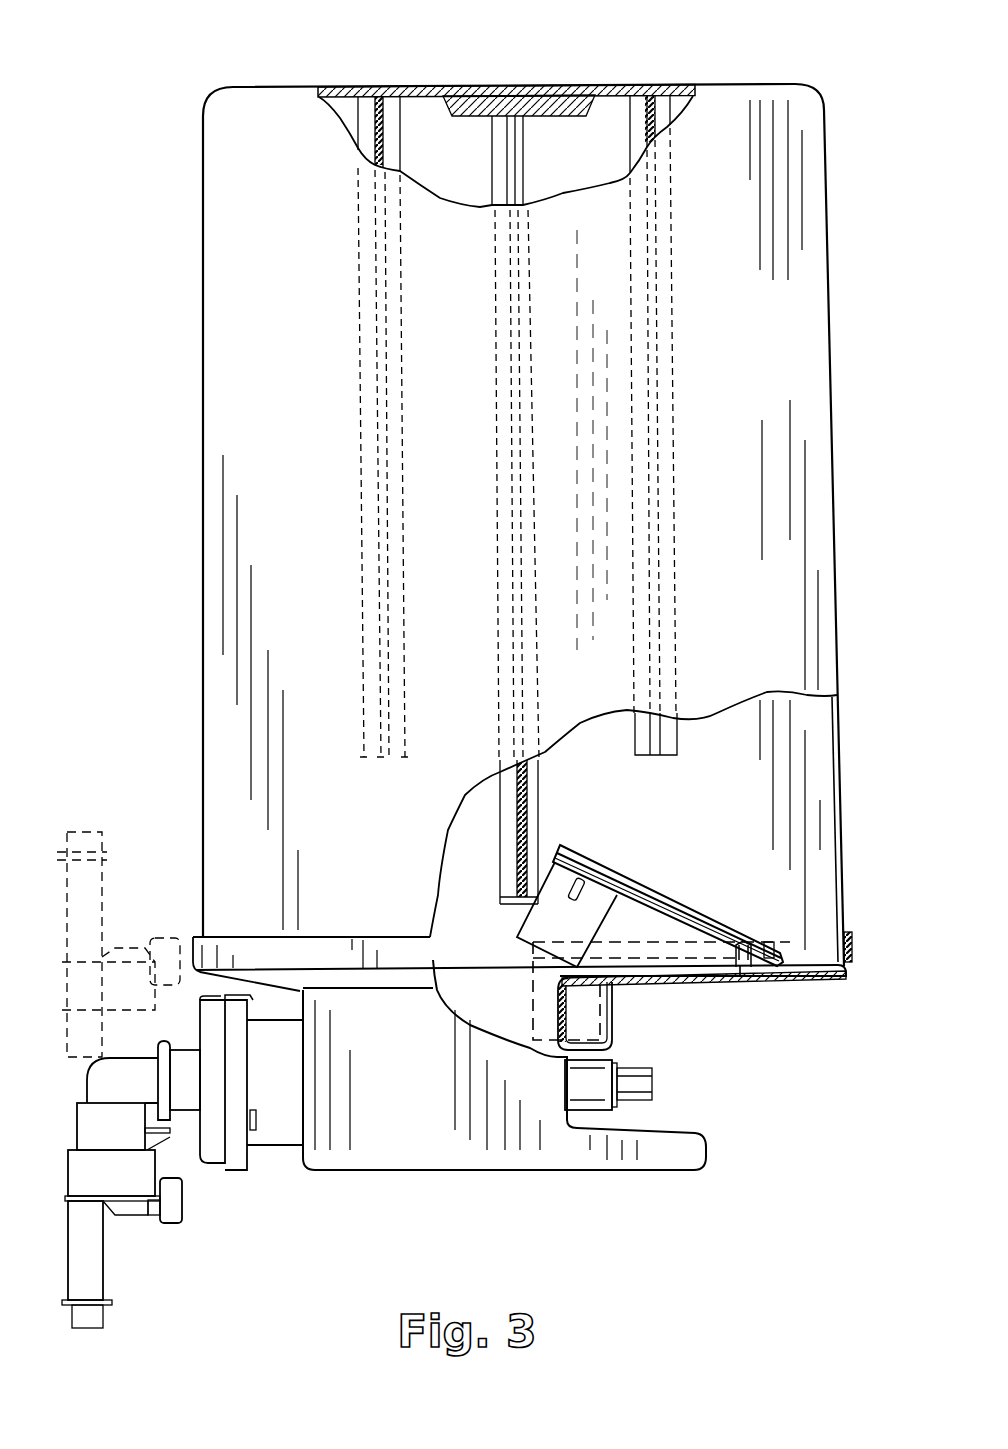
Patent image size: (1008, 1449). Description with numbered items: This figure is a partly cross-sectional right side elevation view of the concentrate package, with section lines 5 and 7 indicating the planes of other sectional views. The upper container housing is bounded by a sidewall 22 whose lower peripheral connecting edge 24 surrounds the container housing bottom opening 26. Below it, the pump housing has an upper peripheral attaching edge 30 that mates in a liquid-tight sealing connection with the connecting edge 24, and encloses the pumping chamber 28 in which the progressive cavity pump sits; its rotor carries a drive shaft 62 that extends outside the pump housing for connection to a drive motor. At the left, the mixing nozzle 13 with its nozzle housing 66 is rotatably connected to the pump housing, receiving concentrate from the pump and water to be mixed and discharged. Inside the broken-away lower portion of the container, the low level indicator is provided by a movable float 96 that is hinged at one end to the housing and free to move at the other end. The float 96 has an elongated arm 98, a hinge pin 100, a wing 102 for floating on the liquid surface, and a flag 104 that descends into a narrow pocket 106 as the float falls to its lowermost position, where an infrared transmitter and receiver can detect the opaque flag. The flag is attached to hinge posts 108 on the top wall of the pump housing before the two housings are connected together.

The section line 5- 5 is at (470, 808).
The section line 7- 7 is at (506, 22).
The mixing nozzle 13 is at (96, 1189).
The sidewall 22 is at (836, 757).
The lower peripheral connecting edge 24 is at (852, 969).
The container housing bottom opening 26 is at (795, 975).
The pumping chamber 28 is at (507, 1007).
The upper peripheral attaching edge 30 is at (853, 947).
The drive shaft 62 is at (650, 1087).
The nozzle housing 66 is at (98, 1141).
The float 96 is at (686, 808).
The elongated arm 98 is at (678, 912).
The hinge pin 100 is at (748, 943).
The wing 102 is at (607, 876).
The flag 104 is at (520, 935).
The narrow pocket 106 is at (602, 1037).
The hinge posts 108 is at (740, 975).